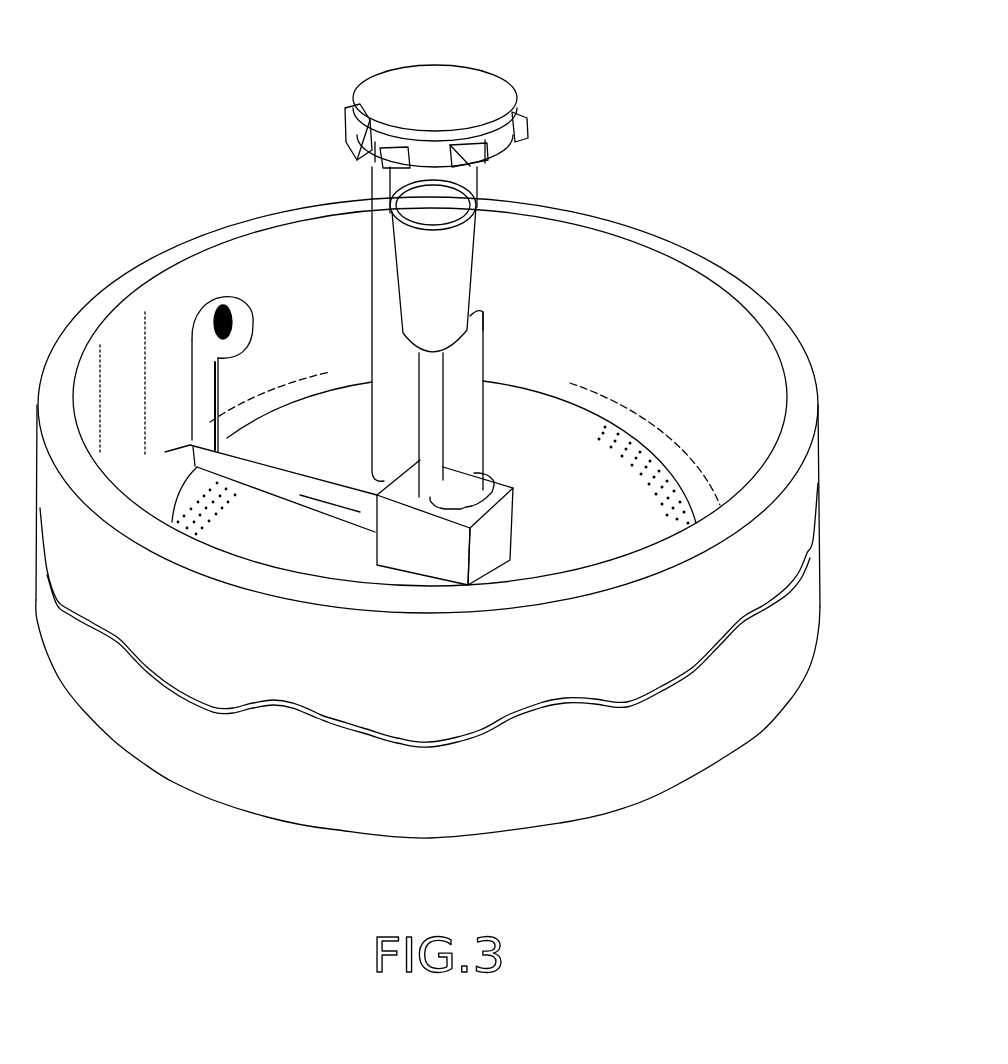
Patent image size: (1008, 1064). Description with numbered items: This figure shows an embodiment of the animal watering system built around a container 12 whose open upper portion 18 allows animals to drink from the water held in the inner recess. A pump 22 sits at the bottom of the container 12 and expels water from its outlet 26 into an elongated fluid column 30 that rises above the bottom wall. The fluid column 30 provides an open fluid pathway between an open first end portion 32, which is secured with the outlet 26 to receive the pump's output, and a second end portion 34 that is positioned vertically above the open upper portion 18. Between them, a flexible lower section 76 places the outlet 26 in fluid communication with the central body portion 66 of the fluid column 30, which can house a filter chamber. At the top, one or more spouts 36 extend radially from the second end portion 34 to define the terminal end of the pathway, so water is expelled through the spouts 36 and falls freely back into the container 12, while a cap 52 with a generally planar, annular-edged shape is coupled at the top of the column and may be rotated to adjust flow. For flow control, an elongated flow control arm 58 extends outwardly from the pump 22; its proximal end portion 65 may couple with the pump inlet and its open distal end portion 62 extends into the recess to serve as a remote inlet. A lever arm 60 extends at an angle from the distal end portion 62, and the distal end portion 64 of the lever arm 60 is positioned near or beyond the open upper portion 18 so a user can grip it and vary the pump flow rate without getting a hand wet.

The container 12 is at (783, 570).
The open upper portion 18 is at (787, 301).
The pump 22 is at (484, 541).
The outlet 26 is at (416, 530).
The fluid column 30 is at (372, 320).
The first end portion 32 is at (463, 477).
The second end portion 34 is at (470, 180).
The spout 36 is at (517, 143).
The cap 52 is at (460, 84).
The flow control arm 58 is at (294, 492).
The lever arm 60 is at (205, 387).
The distal end portion 62 is at (182, 463).
The distal end portion 64 is at (228, 303).
The proximal end portion 65 is at (348, 535).
The central body portion 66 is at (458, 266).
The flexible lower section 76 is at (438, 412).